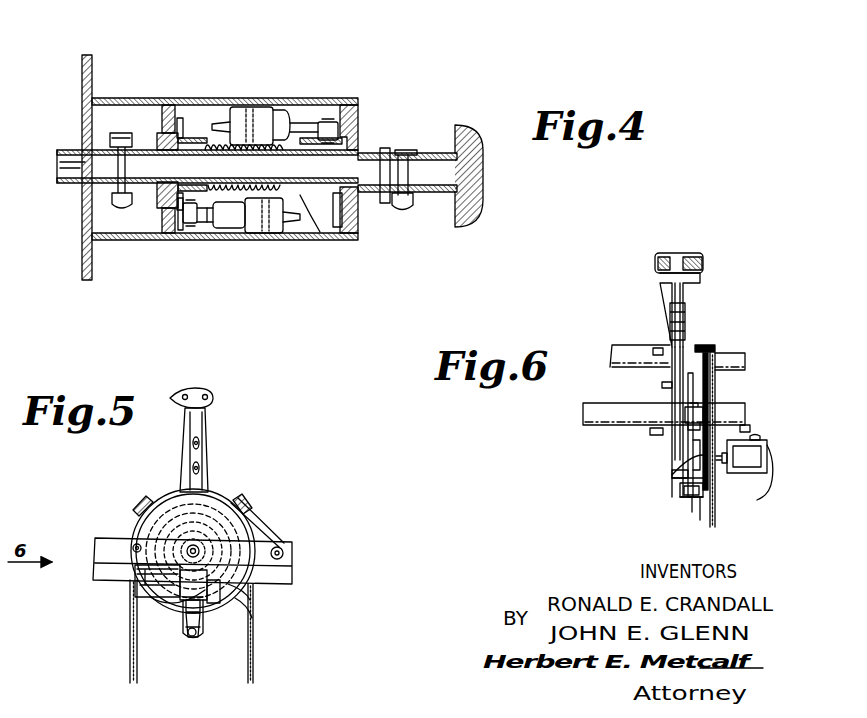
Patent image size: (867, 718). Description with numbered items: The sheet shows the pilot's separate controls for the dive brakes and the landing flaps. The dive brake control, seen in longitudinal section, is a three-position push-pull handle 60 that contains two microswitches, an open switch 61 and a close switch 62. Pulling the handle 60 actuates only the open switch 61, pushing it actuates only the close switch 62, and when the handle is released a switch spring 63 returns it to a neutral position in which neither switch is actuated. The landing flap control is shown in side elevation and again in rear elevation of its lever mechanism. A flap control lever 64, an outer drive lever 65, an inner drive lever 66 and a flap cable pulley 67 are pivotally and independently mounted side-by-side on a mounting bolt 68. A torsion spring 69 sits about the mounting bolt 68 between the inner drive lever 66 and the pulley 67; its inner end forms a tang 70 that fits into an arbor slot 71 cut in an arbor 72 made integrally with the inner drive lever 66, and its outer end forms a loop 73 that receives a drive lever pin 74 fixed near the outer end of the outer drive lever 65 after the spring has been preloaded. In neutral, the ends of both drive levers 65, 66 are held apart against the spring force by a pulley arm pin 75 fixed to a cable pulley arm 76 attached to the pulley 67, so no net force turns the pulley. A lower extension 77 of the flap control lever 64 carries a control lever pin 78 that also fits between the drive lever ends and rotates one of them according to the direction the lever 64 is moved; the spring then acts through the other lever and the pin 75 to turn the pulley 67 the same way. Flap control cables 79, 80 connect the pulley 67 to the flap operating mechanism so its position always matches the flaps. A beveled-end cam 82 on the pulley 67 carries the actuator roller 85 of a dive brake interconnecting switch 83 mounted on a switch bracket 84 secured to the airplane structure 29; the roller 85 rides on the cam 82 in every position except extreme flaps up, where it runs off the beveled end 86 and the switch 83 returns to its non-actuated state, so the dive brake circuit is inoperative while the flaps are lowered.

In FIG. 6, the airplane structure 29 is at (747, 424).
In FIG. 4, the push-pull handle 60 is at (484, 185).
In FIG. 4, the open switch 61 is at (253, 238).
In FIG. 4, the close switch 62 is at (250, 118).
In FIG. 4, the switch spring 63 is at (322, 240).
In FIG. 5, the flap control lever 64 is at (207, 430).
In FIG. 6, the flap control lever 64 is at (682, 257).
In FIG. 5, the outer drive lever 65 is at (207, 627).
In FIG. 6, the outer drive lever 65 is at (683, 500).
In FIG. 5, the inner drive lever 66 is at (185, 632).
In FIG. 6, the inner drive lever 66 is at (687, 507).
In FIG. 5, the flap cable pulley 67 is at (248, 585).
In FIG. 6, the flap cable pulley 67 is at (717, 358).
In FIG. 5, the mounting bolt 68 is at (187, 548).
In FIG. 6, the mounting bolt 68 is at (670, 447).
In FIG. 5, the torsion spring 69 is at (253, 535).
In FIG. 6, the torsion spring 69 is at (697, 387).
In FIG. 5, the tang 70 is at (200, 568).
In FIG. 5, the arbor slot 71 is at (134, 545).
In FIG. 5, the arbor 72 is at (240, 502).
In FIG. 6, the arbor 72 is at (717, 398).
In FIG. 5, the loop 73 is at (183, 613).
In FIG. 5, the drive lever pin 74 is at (180, 615).
In FIG. 6, the drive lever pin 74 is at (670, 475).
In FIG. 5, the pulley arm pin 75 is at (188, 638).
In FIG. 6, the pulley arm pin 75 is at (695, 512).
In FIG. 5, the cable pulley arm 76 is at (197, 640).
In FIG. 6, the cable pulley arm 76 is at (683, 493).
In FIG. 6, the lower extension 77 is at (672, 475).
In FIG. 5, the control lever pin 78 is at (192, 617).
In FIG. 6, the control lever pin 78 is at (670, 490).
In FIG. 5, the flap control cable 79 is at (132, 637).
In FIG. 6, the flap control cable 79 is at (703, 520).
In FIG. 5, the flap control cable 80 is at (253, 645).
In FIG. 5, the beveled-end cam 82 is at (210, 603).
In FIG. 6, the beveled-end cam 82 is at (720, 515).
In FIG. 5, the dive brake interconnecting switch 83 is at (135, 580).
In FIG. 6, the dive brake interconnecting switch 83 is at (752, 473).
In FIG. 5, the switch bracket 84 is at (137, 572).
In FIG. 6, the switch bracket 84 is at (757, 500).
In FIG. 5, the actuator roller 85 is at (177, 597).
In FIG. 6, the actuator roller 85 is at (713, 460).
In FIG. 5, the beveled end 86 is at (245, 600).